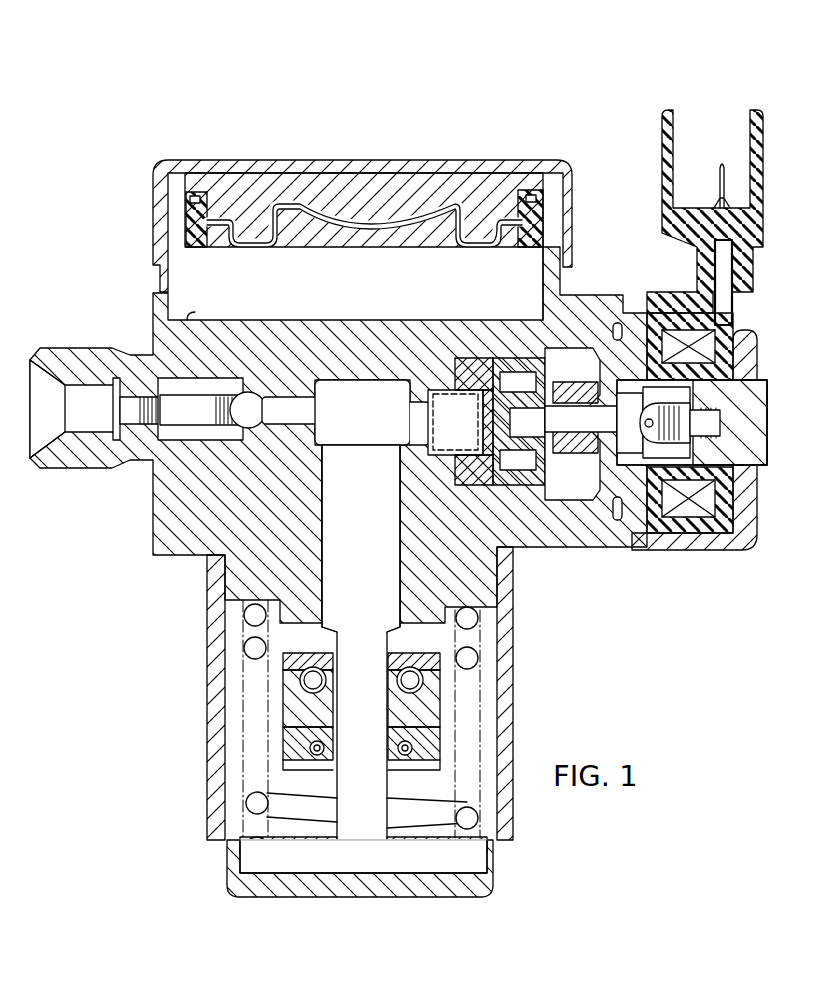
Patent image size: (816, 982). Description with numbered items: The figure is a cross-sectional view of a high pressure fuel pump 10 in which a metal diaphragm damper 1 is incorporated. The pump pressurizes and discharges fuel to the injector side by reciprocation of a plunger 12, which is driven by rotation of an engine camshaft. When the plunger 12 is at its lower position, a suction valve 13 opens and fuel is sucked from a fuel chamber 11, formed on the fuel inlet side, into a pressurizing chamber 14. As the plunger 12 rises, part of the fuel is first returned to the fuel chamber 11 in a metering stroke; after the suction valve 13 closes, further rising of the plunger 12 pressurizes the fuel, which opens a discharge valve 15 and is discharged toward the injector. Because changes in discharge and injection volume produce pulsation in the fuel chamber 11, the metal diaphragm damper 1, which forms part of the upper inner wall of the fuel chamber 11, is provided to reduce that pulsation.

The high pressure fuel pump 10 is at (534, 95).
The fuel chamber 11 is at (203, 279).
The metal diaphragm damper 1 is at (422, 230).
The discharge valve 15 is at (237, 432).
The pressurizing chamber 14 is at (337, 428).
The plunger 12 is at (337, 563).
The suction valve 13 is at (548, 455).